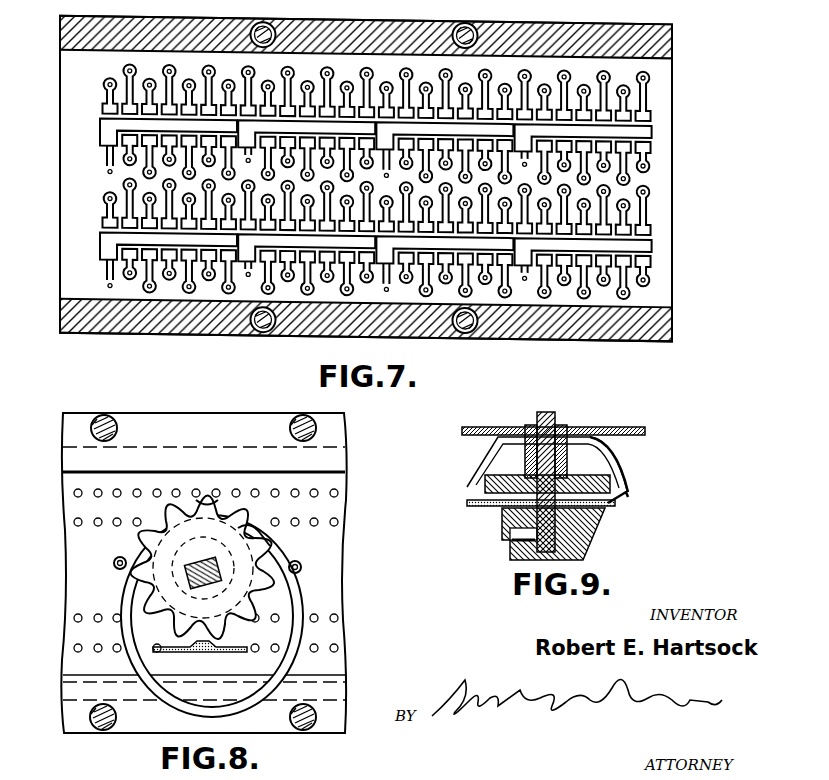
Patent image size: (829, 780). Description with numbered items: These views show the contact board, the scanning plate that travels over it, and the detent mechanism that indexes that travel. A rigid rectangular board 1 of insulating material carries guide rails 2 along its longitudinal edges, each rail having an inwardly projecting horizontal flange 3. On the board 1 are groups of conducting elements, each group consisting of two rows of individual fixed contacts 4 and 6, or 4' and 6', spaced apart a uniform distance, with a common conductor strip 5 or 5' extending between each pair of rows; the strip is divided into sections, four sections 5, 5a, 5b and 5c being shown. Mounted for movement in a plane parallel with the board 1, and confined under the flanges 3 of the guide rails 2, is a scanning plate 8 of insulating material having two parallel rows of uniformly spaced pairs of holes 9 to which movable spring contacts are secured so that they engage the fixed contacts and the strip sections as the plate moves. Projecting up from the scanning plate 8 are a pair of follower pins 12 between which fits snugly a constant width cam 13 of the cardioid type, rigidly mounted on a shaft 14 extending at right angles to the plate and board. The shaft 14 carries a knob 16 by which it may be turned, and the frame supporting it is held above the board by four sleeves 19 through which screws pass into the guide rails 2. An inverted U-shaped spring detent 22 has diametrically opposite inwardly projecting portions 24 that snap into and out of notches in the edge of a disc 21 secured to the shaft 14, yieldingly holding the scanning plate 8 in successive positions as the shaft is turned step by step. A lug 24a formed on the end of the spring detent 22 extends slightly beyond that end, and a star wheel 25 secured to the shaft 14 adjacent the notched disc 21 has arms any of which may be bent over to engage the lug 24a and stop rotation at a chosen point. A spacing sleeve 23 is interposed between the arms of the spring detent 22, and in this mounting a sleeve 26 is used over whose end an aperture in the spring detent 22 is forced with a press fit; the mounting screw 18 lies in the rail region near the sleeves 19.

In FIG. 7, the board 1 is at (68, 195).
In FIG. 9, the board 1 is at (481, 427).
In FIG. 7, the guide rails 2 is at (62, 37).
In FIG. 8, the guide rails 2 is at (192, 426).
In FIG. 8, the horizontal flanges 3 is at (77, 458).
In FIG. 7, the fixed contacts 4 is at (381, 93).
In FIG. 7, the fixed contacts 4' is at (398, 207).
In FIG. 7, the common conductor strip 5 is at (155, 132).
In FIG. 7, the common conductor strip 5' is at (361, 249).
In FIG. 7, the conductor strip section 5a is at (266, 124).
In FIG. 7, the conductor strip section 5b is at (442, 125).
In FIG. 7, the conductor strip section 5c is at (647, 121).
In FIG. 7, the fixed contacts 6 is at (382, 160).
In FIG. 7, the fixed contacts 6' is at (402, 273).
In FIG. 8, the scanning plate 8 is at (75, 553).
In FIG. 8, the holes 9 is at (115, 518).
In FIG. 8, the follower pins 12 is at (116, 561).
In FIG. 8, the constant width cam 13 is at (277, 673).
In FIG. 8, the shaft 14 is at (218, 573).
In FIG. 9, the shaft 14 is at (548, 416).
In FIG. 9, the knob 16 is at (523, 553).
In FIG. 7, the mounting screw 18 is at (474, 326).
In FIG. 7, the sleeves 19 is at (250, 331).
In FIG. 8, the sleeves 19 is at (122, 410).
In FIG. 8, the disc 21 is at (277, 598).
In FIG. 9, the disc 21 is at (578, 482).
In FIG. 8, the spring detent 22 is at (228, 652).
In FIG. 9, the spring detent 22 is at (616, 467).
In FIG. 9, the spacing sleeve 23 is at (526, 458).
In FIG. 8, the inwardly projecting portions 24 is at (199, 651).
In FIG. 9, the lug 24a is at (625, 505).
In FIG. 8, the star wheel 25 is at (266, 541).
In FIG. 9, the star wheel 25 is at (478, 507).
In FIG. 9, the sleeve 26 is at (526, 425).